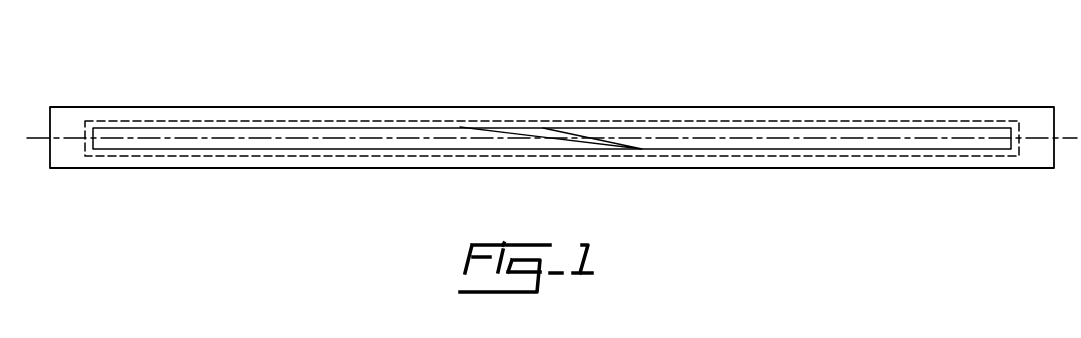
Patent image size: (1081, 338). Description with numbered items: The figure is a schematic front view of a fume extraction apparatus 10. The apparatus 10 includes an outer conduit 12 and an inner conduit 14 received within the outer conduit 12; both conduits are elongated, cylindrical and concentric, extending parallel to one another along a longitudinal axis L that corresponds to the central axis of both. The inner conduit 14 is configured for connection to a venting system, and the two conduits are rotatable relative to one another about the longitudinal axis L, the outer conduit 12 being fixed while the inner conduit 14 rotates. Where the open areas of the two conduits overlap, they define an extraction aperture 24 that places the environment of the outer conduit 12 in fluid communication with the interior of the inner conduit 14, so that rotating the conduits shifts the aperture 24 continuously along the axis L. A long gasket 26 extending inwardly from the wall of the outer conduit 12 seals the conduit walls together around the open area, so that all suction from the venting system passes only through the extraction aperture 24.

The fume extraction apparatus 10 is at (185, 107).
The outer conduit 12 is at (147, 150).
The inner conduit 14 is at (316, 170).
The extraction aperture 24 is at (543, 128).
The gasket 26 is at (833, 157).
The longitudinal axis L is at (1042, 137).